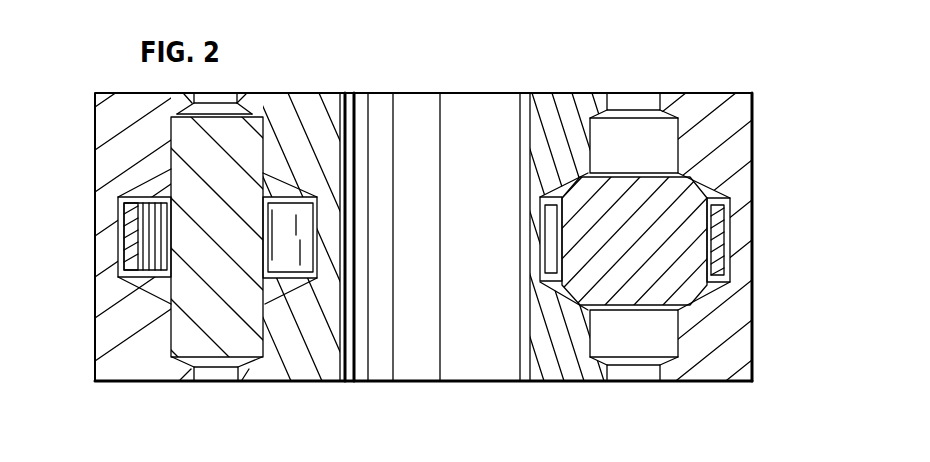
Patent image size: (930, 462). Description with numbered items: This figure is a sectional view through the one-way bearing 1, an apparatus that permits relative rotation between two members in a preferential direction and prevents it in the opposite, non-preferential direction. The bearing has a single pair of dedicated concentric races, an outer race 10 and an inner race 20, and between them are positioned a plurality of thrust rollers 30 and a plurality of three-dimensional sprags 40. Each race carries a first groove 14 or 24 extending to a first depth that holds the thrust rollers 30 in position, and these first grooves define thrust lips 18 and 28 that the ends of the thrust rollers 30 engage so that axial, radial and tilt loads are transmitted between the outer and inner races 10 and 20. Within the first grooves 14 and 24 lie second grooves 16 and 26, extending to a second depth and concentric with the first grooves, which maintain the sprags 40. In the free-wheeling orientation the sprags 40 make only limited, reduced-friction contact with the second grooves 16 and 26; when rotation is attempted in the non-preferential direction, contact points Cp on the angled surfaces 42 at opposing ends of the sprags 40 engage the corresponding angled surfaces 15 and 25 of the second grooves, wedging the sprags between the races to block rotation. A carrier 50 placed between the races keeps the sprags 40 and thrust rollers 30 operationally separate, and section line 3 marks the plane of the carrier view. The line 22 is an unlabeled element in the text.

The one-way bearing 1 is at (767, 109).
The section line 3— 3 is at (60, 284).
The outer race 10 is at (682, 93).
The first groove 14 is at (145, 128).
The angled surface 15 is at (704, 191).
The second groove 16 is at (114, 215).
The thrust lip 18 is at (167, 93).
The inner race 20 is at (568, 177).
The tube 22 is at (353, 115).
The first groove 24 is at (263, 150).
The angled surface 25 is at (584, 381).
The second groove 26 is at (318, 223).
The thrust lip 28 is at (241, 100).
The thrust roller 30 is at (248, 108).
The three-dimensional sprag 40 is at (560, 195).
The angled surface 42 is at (726, 104).
The carrier 50 is at (725, 266).
The contact point Cp is at (752, 364).